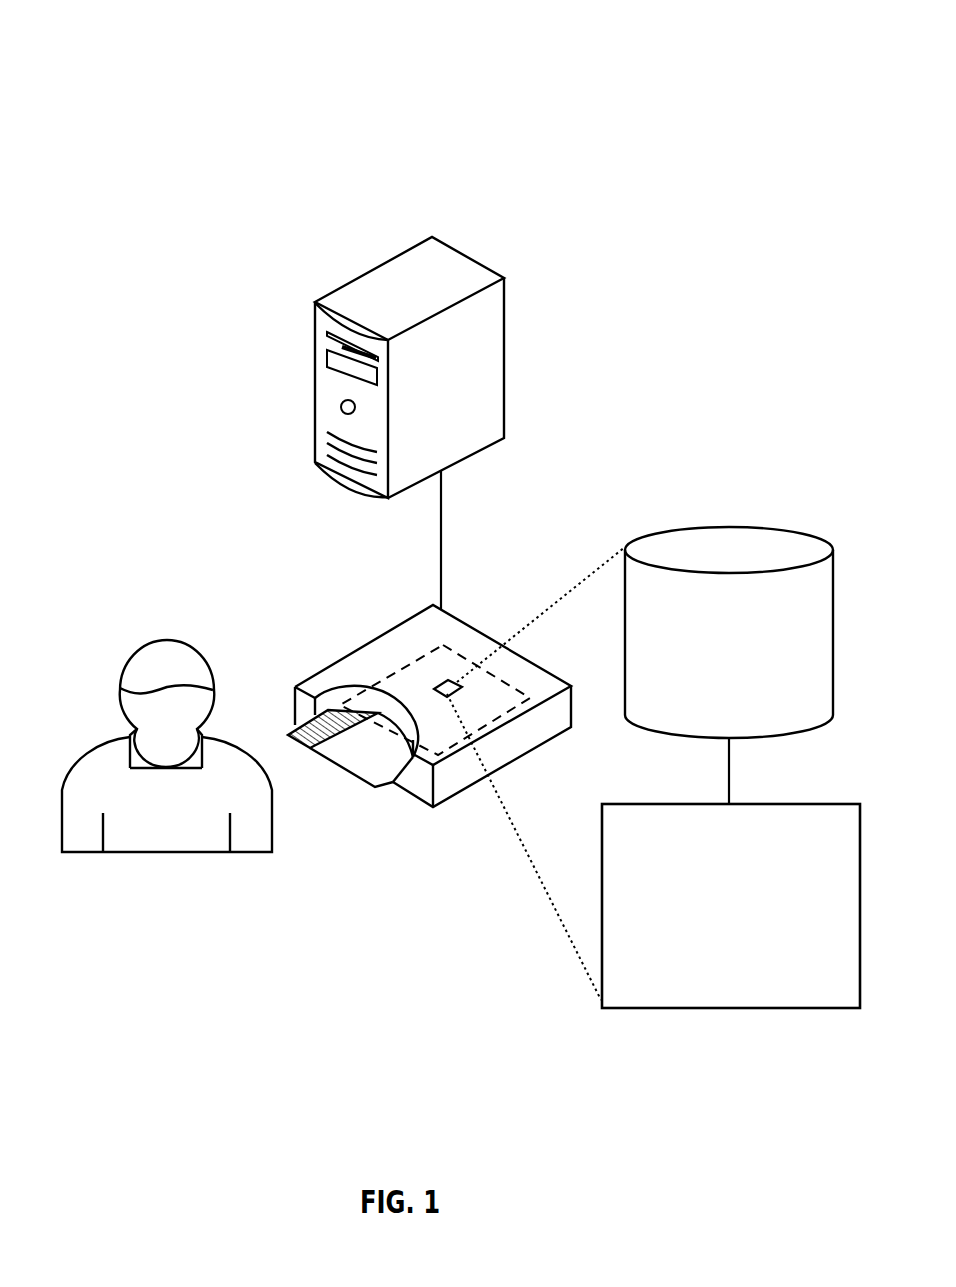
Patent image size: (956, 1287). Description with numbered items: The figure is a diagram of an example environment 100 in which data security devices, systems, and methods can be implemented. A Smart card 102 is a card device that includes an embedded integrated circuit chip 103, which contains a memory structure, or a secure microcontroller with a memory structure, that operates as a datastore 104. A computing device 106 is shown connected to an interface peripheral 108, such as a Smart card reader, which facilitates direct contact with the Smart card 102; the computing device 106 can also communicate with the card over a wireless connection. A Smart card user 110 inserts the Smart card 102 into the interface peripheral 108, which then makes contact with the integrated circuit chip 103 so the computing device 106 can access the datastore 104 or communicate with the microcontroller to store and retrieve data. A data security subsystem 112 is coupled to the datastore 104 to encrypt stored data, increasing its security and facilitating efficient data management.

The system 100 is at (101, 89).
The Smart card 102 is at (372, 788).
The integrated circuit chip 103 is at (449, 680).
The datastore 104 is at (777, 529).
The computing device 106 is at (504, 302).
The interface peripheral 108 is at (368, 641).
The Smart card user 110 is at (167, 640).
The data security subsystem 112 is at (737, 1008).